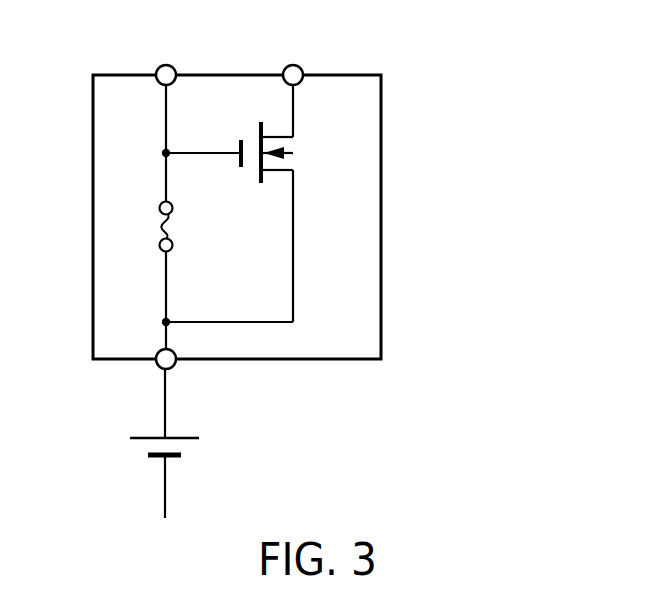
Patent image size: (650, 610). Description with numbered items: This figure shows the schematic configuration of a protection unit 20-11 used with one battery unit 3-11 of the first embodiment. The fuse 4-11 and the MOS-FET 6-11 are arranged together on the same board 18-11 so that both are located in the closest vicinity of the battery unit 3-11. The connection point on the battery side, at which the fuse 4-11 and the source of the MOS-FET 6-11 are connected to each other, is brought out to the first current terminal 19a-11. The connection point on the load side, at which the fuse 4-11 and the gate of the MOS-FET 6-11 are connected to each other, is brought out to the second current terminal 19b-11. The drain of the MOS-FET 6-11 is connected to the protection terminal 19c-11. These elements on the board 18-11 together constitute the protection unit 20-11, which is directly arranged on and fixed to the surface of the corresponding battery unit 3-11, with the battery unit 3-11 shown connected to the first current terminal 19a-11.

The protection unit 20-11 is at (458, 34).
The board 18-11 is at (374, 107).
The first current terminal 19a-11 is at (175, 366).
The second current terminal 19b-11 is at (165, 65).
The protection terminal 19c-11 is at (293, 65).
The MOS-FET 6-11 is at (288, 149).
The fuse 4-11 is at (170, 228).
The battery unit 3-11 is at (184, 447).